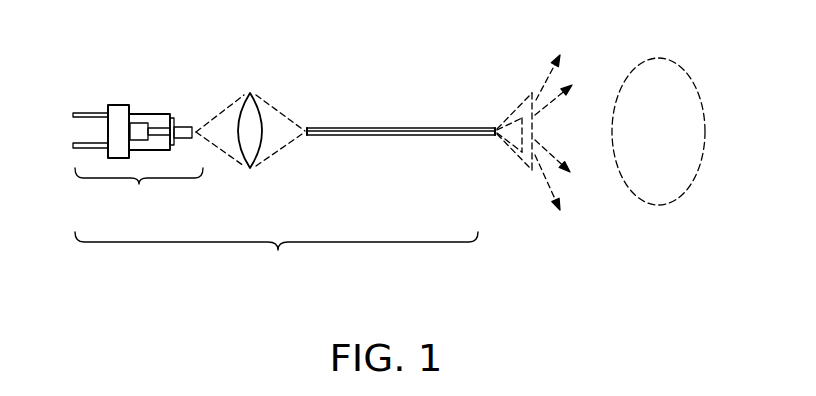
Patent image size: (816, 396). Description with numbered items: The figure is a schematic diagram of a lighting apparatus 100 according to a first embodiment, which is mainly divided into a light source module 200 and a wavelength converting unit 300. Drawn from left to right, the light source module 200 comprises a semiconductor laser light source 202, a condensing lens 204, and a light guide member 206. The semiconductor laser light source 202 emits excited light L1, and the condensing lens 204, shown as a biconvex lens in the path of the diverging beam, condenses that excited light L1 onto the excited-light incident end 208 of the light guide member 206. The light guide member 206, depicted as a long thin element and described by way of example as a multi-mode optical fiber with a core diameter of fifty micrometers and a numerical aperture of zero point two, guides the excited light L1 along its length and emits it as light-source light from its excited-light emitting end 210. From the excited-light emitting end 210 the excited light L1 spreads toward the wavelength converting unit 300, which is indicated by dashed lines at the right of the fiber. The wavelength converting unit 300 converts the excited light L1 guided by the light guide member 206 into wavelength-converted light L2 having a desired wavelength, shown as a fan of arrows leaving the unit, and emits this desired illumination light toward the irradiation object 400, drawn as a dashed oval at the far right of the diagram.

The lighting apparatus 100 is at (426, 307).
The light source module 200 is at (276, 256).
The semiconductor laser light source 202 is at (138, 159).
The condensing lens 204 is at (248, 158).
The light guide member 206 is at (366, 136).
The excited-light incident end 208 is at (302, 140).
The excited-light emitting end 210 is at (493, 137).
The wavelength converting unit 300 is at (507, 165).
The irradiation object 400 is at (660, 58).
The excited light L1 is at (219, 110).
The wavelength-converted light L2 is at (546, 82).